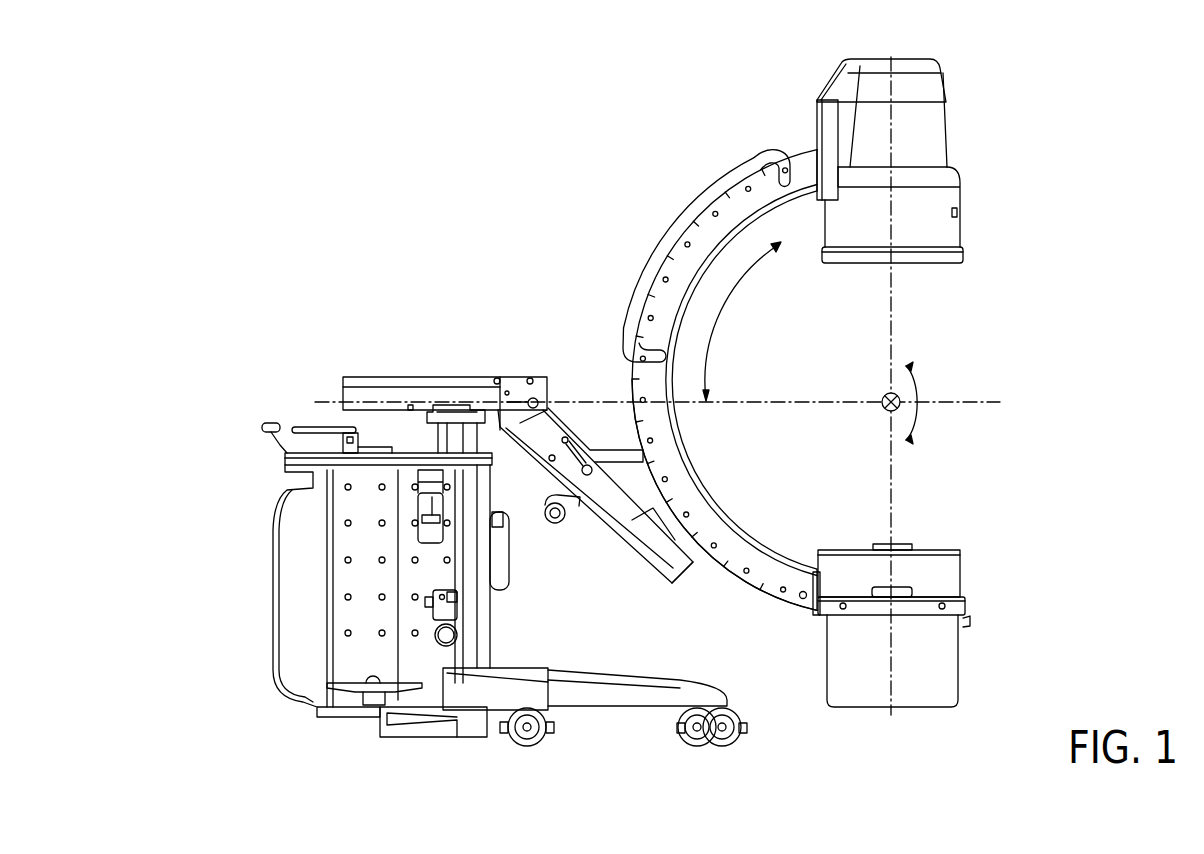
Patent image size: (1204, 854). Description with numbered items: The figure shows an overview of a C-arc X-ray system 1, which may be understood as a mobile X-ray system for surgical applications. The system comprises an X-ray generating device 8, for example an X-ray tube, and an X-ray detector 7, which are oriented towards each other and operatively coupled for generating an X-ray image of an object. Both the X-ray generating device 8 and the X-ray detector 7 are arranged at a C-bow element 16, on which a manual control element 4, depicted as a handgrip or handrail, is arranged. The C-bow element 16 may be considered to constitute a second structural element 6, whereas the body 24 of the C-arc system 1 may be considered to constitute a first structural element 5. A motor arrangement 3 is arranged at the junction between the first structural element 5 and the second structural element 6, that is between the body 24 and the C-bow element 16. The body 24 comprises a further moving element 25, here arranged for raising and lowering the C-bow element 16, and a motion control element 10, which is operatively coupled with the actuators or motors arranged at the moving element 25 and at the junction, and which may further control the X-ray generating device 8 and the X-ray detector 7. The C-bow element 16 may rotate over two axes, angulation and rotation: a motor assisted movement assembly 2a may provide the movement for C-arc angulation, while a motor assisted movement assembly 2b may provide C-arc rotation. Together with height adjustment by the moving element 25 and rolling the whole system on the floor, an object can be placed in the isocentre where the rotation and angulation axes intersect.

The C-arc X-ray system 1 is at (1053, 76).
The motor assisted movement assembly 2a is at (783, 580).
The motor assisted movement assembly 2b is at (660, 558).
The motor arrangement 3 is at (649, 490).
The manual control element 4 is at (641, 263).
The first structural element 5 is at (600, 446).
The second structural element 6 is at (672, 445).
The X-ray detector 7 is at (937, 208).
The X-ray generating device 8 is at (940, 670).
The motion control element 10 is at (430, 577).
The C-bow element 16 is at (750, 202).
The body 24 is at (232, 375).
The moving element 25 is at (455, 415).